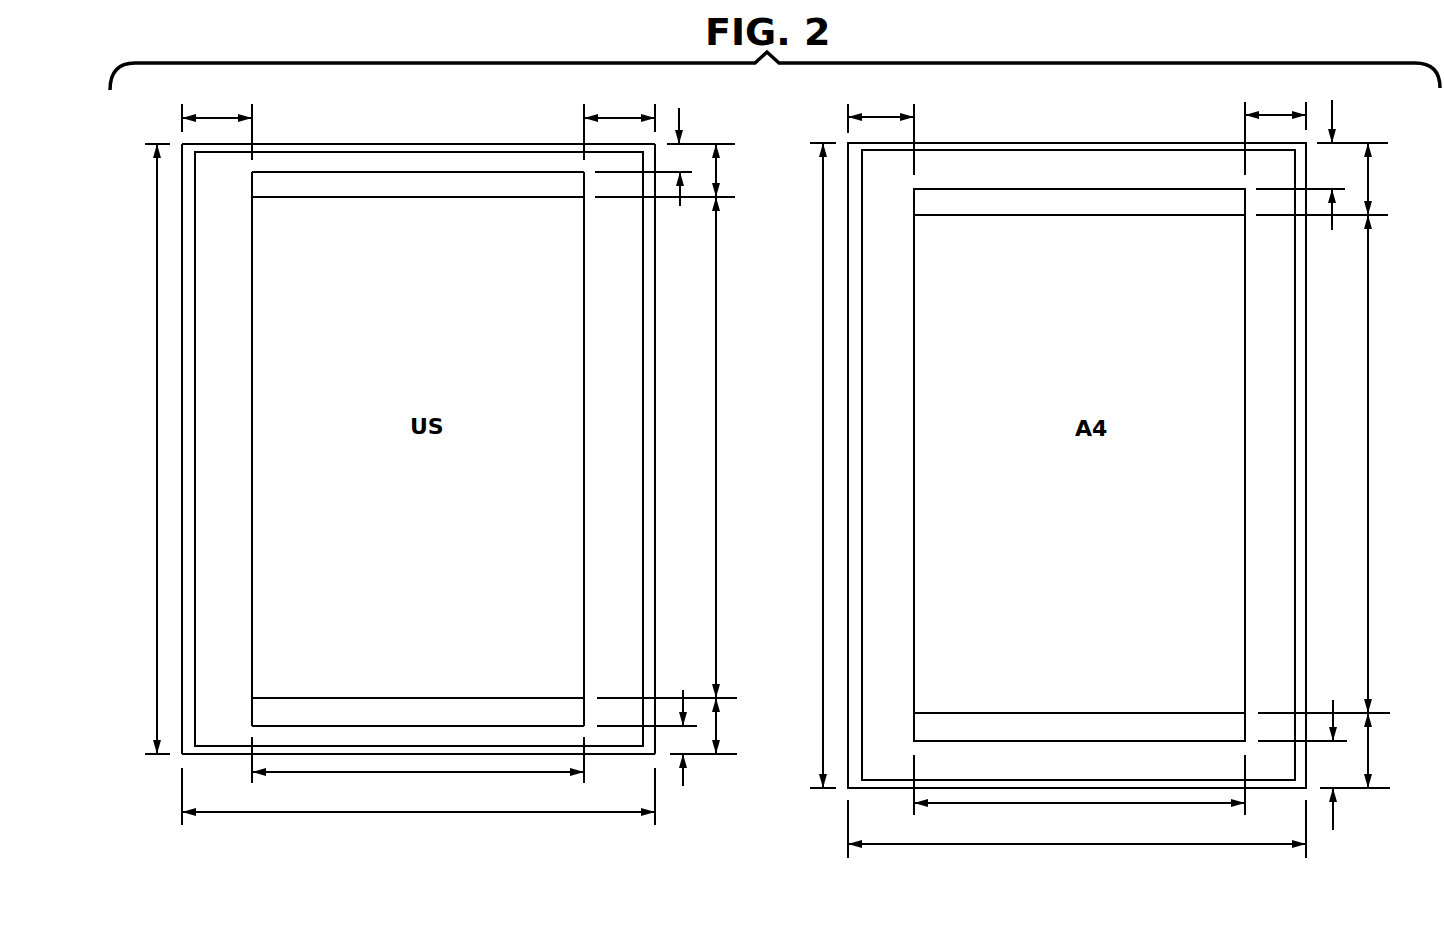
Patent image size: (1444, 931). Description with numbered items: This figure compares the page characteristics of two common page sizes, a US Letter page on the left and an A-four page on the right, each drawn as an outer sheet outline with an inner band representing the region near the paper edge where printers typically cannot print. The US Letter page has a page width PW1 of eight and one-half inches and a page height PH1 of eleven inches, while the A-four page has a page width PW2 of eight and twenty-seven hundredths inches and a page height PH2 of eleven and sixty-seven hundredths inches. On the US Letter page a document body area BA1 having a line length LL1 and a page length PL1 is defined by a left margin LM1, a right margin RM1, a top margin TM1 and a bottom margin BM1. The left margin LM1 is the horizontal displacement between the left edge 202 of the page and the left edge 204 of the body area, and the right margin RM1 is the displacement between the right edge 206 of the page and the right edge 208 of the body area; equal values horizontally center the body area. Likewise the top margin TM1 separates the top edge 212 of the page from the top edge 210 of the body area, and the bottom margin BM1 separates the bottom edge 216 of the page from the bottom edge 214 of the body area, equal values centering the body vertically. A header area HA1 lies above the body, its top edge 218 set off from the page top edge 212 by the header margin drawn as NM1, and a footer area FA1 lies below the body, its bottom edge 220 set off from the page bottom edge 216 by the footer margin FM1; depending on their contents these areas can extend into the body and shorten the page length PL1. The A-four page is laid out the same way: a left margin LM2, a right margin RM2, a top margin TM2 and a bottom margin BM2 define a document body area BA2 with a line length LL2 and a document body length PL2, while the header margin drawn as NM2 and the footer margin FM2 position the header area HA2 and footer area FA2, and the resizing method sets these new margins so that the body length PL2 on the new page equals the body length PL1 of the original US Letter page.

The left edge of the US Letter page 202 is at (182, 359).
The left edge of the document body area 204 is at (252, 410).
The right edge of the US Letter page 206 is at (657, 440).
The right edge of the document body area 208 is at (584, 313).
The top edge of the document body area 210 is at (497, 197).
The top edge of the US Letter page 212 is at (318, 145).
The bottom edge of the document body area 214 is at (403, 698).
The bottom edge of the US Letter page 216 is at (197, 758).
The top edge of the header area 218 is at (413, 172).
The bottom edge of the footer area 220 is at (447, 726).
The left margin LM1 is at (216, 118).
The right margin RM1 is at (622, 118).
The non-printable top margin (US) NM1 is at (681, 122).
The top margin TM1 is at (716, 174).
The bottom margin BM1 is at (718, 722).
The footer margin FM1 is at (683, 782).
The page height PH1 is at (157, 455).
The page length PL1 is at (717, 335).
The line length LL1 is at (400, 772).
The page width PW1 is at (480, 812).
The header area HA1 is at (258, 185).
The document body area BA1 is at (258, 556).
The footer area FA1 is at (258, 712).
The left margin LM2 is at (878, 117).
The right margin RM2 is at (1275, 115).
The non-printable top margin (A4) NM2 is at (1332, 113).
The top margin TM2 is at (1368, 178).
The bottom margin BM2 is at (1369, 748).
The footer margin FM2 is at (1333, 818).
The page height PH2 is at (823, 487).
The document body length PL2 is at (1368, 510).
The line length (A4) LL2 is at (1045, 803).
The page width PW2 is at (1115, 844).
The header area (A4) HA2 is at (922, 203).
The document body area BA2 is at (925, 563).
The footer area (A4) FA2 is at (925, 727).